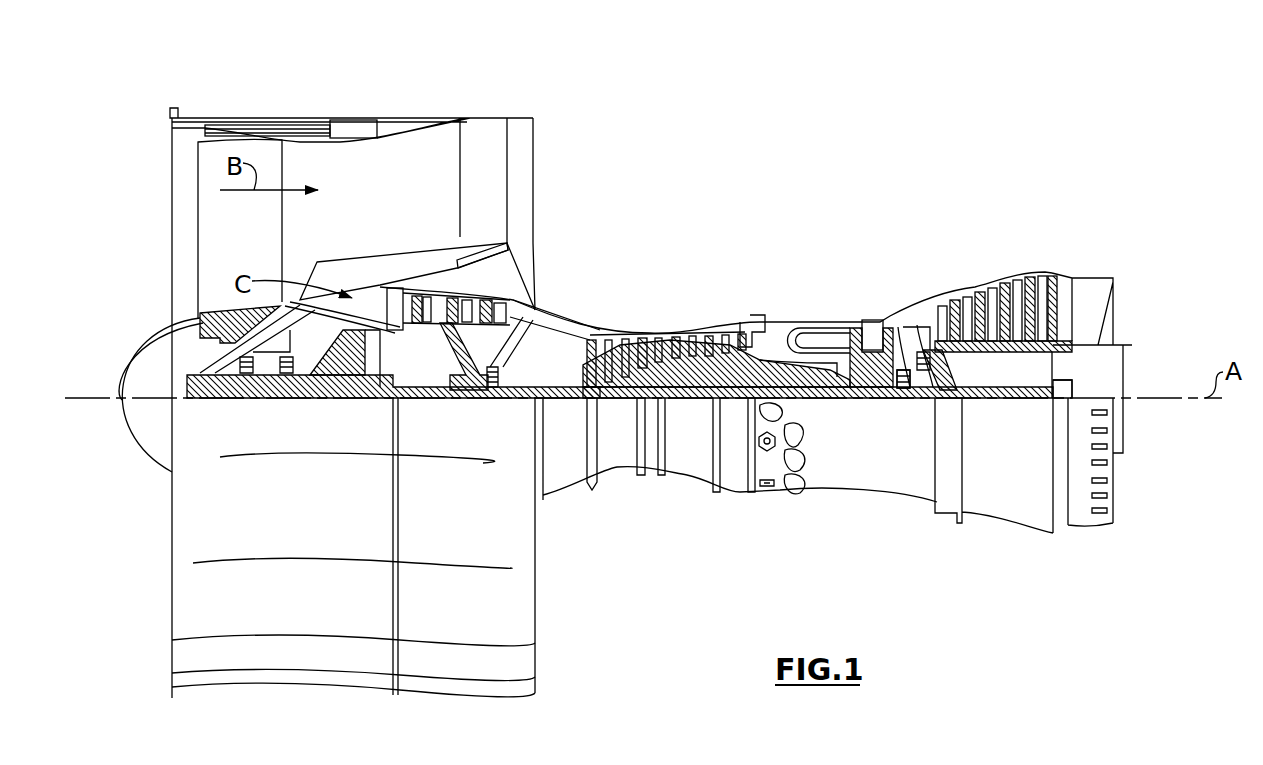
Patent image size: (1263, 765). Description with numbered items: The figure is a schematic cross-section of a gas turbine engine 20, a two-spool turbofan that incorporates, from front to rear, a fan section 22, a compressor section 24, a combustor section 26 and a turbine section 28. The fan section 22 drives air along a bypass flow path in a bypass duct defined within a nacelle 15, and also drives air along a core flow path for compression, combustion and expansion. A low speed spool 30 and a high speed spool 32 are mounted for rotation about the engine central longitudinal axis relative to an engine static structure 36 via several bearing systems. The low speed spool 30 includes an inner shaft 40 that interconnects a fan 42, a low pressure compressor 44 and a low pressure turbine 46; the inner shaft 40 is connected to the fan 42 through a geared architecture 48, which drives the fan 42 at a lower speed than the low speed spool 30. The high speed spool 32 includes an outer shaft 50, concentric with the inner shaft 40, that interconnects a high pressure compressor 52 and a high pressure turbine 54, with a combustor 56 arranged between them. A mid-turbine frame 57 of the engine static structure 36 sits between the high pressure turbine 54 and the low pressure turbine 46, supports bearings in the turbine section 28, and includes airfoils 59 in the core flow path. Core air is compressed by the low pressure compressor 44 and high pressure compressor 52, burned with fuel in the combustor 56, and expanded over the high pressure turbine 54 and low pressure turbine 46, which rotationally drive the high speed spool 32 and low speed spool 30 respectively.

The nacelle 15 is at (353, 120).
The gas turbine engine 20 is at (815, 164).
The fan section 22 is at (280, 105).
The compressor section 24 is at (583, 306).
The combustor section 26 is at (810, 290).
The turbine section 28 is at (952, 255).
The low speed spool 30 is at (690, 403).
The high speed spool 32 is at (730, 363).
The engine static structure 36 is at (731, 489).
The inner shaft 40 is at (550, 400).
The fan 42 is at (257, 243).
The low pressure compressor 44 is at (457, 307).
The low pressure turbine 46 is at (1000, 290).
The geared architecture 48 is at (360, 380).
The outer shaft 50 is at (820, 398).
The high pressure compressor 52 is at (667, 373).
The high pressure turbine 54 is at (870, 335).
The combustor 56 is at (800, 338).
The mid-turbine frame 57 is at (915, 312).
The airfoils 59 is at (925, 333).